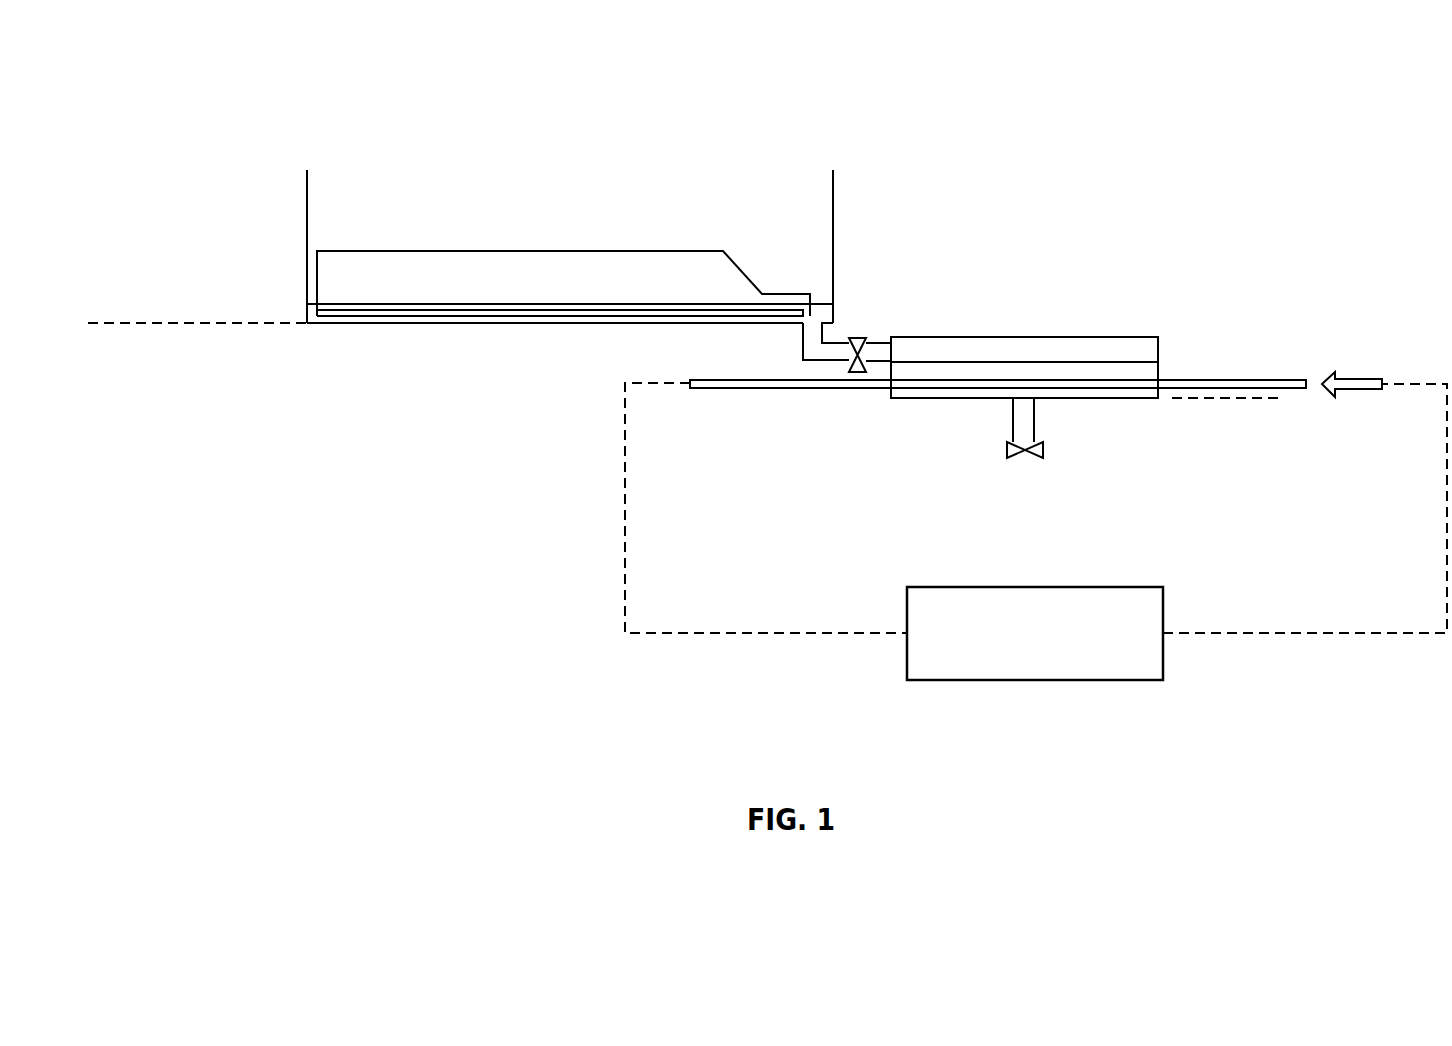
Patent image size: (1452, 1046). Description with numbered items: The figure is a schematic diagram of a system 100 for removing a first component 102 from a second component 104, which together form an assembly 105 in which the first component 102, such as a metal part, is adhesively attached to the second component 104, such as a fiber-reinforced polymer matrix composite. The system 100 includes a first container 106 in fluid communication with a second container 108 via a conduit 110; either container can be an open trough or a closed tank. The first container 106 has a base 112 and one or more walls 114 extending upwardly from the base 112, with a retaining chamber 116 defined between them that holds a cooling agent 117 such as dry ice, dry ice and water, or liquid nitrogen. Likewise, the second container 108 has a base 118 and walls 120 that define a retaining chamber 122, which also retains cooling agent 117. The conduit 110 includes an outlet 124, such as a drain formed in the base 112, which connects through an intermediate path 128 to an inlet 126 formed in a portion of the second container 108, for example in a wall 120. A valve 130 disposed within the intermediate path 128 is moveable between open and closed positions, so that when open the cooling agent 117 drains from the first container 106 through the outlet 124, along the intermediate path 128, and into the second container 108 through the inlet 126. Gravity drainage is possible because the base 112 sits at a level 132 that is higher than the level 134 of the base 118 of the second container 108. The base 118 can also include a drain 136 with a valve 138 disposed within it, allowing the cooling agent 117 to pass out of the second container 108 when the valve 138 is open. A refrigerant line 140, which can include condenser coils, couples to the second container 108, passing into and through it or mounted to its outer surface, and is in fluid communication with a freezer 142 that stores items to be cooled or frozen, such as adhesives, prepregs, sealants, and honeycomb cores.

The system 100 is at (203, 124).
The first component 102 is at (483, 318).
The second component 104 is at (488, 265).
The assembly 105 is at (650, 238).
The first container 106 is at (280, 277).
The second container 108 is at (1160, 322).
The conduit 110 is at (823, 343).
The base 112 is at (328, 326).
The walls 114 is at (307, 193).
The retaining chamber 116 is at (757, 198).
The cooling agent 117 is at (822, 303).
The base 118 is at (1108, 400).
The walls 120 is at (1160, 355).
The retaining chamber 122 is at (993, 346).
The outlet 124 is at (809, 327).
The inlet 126 is at (897, 352).
The intermediate path 128 is at (800, 358).
The valve 130 is at (850, 354).
The level 132 is at (108, 326).
The level 134 is at (1262, 400).
The drain 136 is at (1023, 404).
The valve 138 is at (1028, 460).
The refrigerant line 140 is at (1300, 378).
The freezer 142 is at (1045, 681).